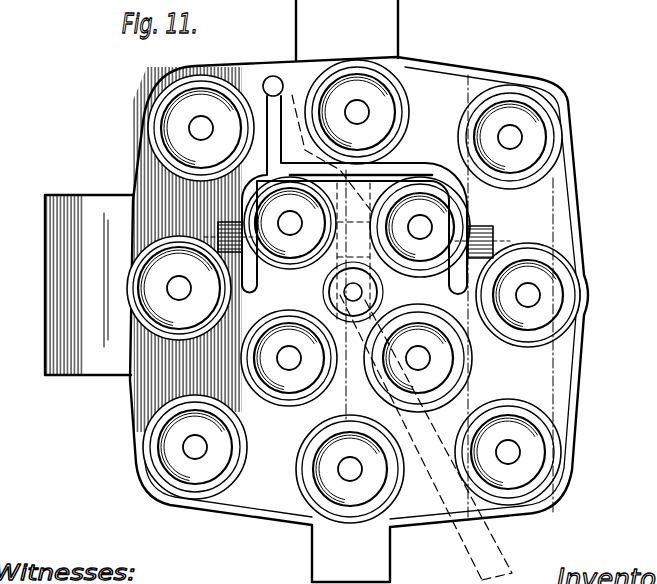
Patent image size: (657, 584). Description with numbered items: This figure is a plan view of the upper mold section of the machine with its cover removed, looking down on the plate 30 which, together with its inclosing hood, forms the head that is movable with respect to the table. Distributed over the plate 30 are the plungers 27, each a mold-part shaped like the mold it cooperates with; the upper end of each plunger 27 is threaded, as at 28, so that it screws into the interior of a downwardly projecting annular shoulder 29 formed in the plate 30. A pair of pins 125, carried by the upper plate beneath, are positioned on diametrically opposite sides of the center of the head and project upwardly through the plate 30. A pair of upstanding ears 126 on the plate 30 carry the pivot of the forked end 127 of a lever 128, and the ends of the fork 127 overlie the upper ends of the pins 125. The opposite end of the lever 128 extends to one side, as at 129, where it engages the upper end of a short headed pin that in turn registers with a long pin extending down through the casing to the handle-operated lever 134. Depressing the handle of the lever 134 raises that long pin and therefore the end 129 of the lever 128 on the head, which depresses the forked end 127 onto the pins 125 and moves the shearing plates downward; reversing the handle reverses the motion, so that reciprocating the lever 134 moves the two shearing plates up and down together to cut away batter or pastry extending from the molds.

The plunger 27 is at (222, 455).
The threaded upper end 28 is at (222, 455).
The annular shoulder 29 is at (215, 447).
The plate 30 is at (563, 203).
The pins 125 is at (258, 291).
The upstanding ears 126 is at (224, 222).
The forked end 127 is at (481, 215).
The lever 128 is at (354, 200).
The lever end 129 is at (273, 75).
The lever 134 is at (496, 547).